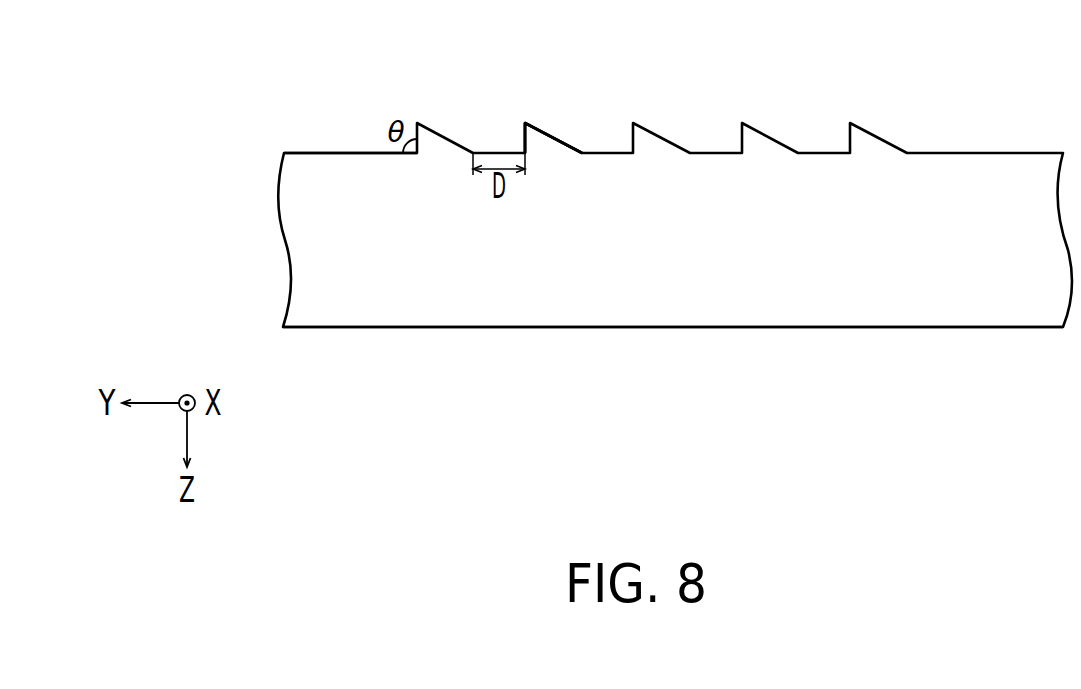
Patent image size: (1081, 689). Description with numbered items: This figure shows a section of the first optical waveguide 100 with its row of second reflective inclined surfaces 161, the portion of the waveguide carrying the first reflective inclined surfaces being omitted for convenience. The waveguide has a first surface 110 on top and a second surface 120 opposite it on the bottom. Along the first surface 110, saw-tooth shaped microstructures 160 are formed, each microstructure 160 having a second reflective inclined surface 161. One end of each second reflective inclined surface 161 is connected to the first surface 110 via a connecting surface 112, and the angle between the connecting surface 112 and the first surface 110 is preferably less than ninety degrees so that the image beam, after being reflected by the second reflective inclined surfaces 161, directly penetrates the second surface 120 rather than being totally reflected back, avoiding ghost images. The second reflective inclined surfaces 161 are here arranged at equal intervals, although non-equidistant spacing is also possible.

The first optical waveguide 100 is at (320, 242).
The first surface 110 is at (315, 153).
The second surface 120 is at (378, 328).
The connecting surface 112 is at (523, 138).
The microstructure 160 is at (549, 143).
The second reflective inclined surface 161 is at (543, 127).